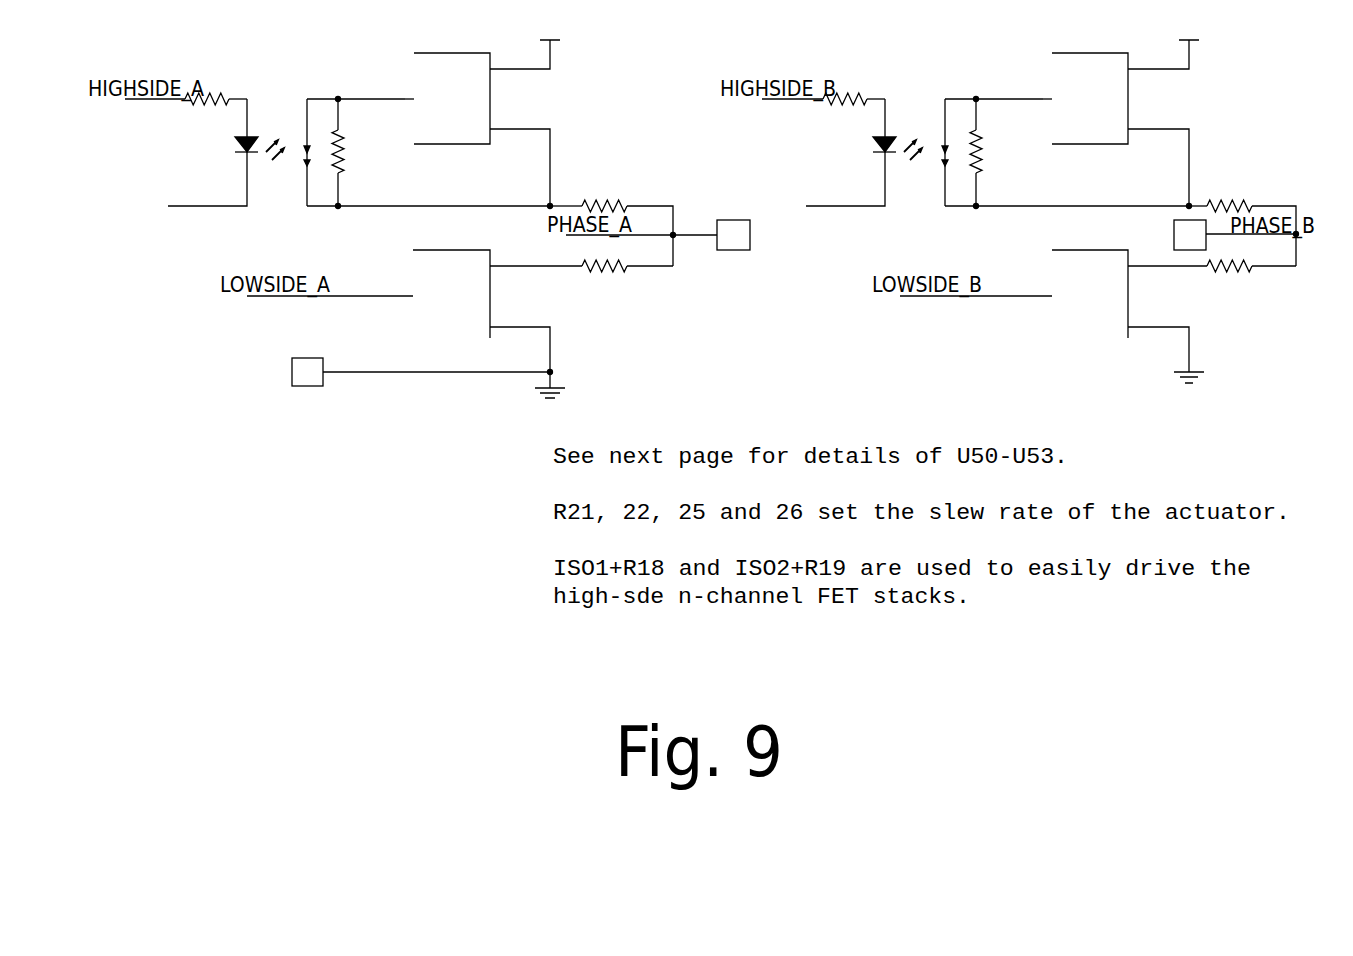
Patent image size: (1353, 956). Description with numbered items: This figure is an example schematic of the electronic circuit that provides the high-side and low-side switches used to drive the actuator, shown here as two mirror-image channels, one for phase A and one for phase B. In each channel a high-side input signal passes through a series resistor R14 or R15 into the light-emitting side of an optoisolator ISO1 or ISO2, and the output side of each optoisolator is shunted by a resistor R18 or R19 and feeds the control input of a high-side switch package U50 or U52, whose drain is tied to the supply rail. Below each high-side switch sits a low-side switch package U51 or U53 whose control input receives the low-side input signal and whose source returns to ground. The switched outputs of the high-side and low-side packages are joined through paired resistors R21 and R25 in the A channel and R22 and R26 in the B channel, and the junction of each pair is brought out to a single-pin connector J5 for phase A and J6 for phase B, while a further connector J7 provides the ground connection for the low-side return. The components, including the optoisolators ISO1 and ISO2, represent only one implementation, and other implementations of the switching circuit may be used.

The resistor R14 600 ohm SM/R_0805 R14 is at (221, 53).
The resistor R15 600 ohm SM/R_0805 R15 is at (856, 53).
The optocoupler ISO1 TLP19x ISO1 is at (309, 152).
The optocoupler ISO2 TLP19x ISO2 is at (946, 152).
The resistor R18 240k SM/R_0850 R18 is at (399, 153).
The resistor R19 240k SM/R_0850 R19 is at (1037, 153).
The half phase 5 pack FET U50 is at (495, 112).
The half phase 5 pack FET U51 is at (479, 312).
The half phase 5 pack FET U52 is at (1132, 112).
The half phase 5 pack FET U53 is at (1108, 305).
The resistor R21 SM/R_1206 slew rate R21 is at (623, 220).
The resistor R22 SM/R_1206 slew rate R22 is at (1262, 216).
The resistor R25 SM/R_1206 slew rate R25 is at (585, 281).
The resistor R26 SM/R_1206 slew rate R26 is at (1230, 281).
The connector J5 CON1 PHASE_A J5 is at (728, 237).
The connector J6 CON1 PHASE_B J6 is at (1178, 236).
The connector J7 CON1 GND J7 is at (409, 370).